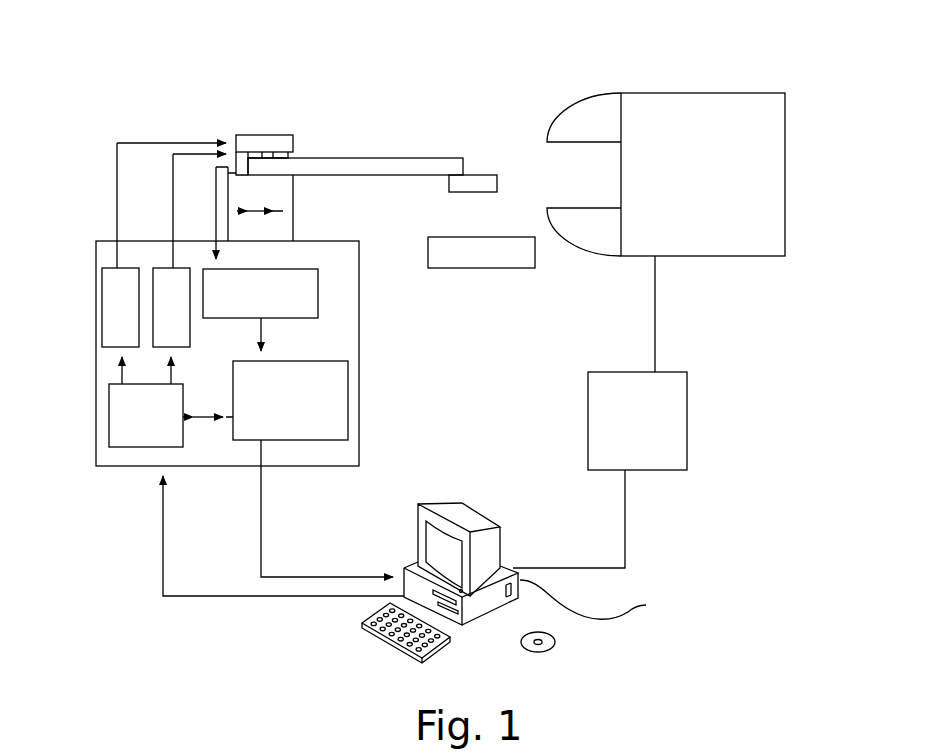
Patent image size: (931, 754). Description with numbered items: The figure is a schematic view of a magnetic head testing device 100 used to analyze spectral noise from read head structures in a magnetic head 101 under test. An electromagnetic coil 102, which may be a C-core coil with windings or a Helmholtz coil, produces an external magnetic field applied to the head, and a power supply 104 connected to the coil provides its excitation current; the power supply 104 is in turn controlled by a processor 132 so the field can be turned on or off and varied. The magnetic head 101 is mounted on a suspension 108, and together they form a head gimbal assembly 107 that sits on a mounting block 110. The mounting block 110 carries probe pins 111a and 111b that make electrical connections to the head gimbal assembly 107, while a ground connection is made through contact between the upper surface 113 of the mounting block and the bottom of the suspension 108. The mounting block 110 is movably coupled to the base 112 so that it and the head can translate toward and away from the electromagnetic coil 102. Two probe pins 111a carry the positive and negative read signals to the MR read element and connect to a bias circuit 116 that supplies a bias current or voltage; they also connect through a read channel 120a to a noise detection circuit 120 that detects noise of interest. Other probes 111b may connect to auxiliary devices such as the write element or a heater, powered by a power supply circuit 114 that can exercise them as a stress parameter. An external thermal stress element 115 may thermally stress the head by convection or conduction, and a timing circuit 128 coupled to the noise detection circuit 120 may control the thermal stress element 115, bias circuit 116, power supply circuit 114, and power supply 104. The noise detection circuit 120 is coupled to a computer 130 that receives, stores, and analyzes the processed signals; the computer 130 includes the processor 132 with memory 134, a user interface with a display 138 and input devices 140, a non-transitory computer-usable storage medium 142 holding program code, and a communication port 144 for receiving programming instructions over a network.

The magnetic head testing device 100 is at (160, 48).
The magnetic head 101 is at (460, 192).
The electromagnetic coil 102 is at (666, 232).
The power supply 104 is at (600, 470).
The head gimbal assembly 107 is at (445, 104).
The suspension 108 is at (390, 158).
The mounting block 110 is at (267, 135).
The probe pins 111a is at (253, 153).
The probe pins 111b is at (262, 153).
The base 112 is at (359, 355).
The upper surface 113 is at (263, 175).
The power supply circuit 114 is at (105, 348).
The external thermal stress element 115 is at (508, 268).
The bias circuit 116 is at (190, 347).
The noise detection circuit 120 is at (348, 395).
The read channel 120a is at (318, 283).
The timing circuit 128 is at (110, 417).
The computer 130 is at (400, 525).
The processor 132 is at (503, 567).
The memory 134 is at (474, 612).
The display 138 is at (422, 503).
The input devices 140 is at (362, 623).
The computer-usable storage medium 142 is at (542, 652).
The communication port 144 is at (602, 599).